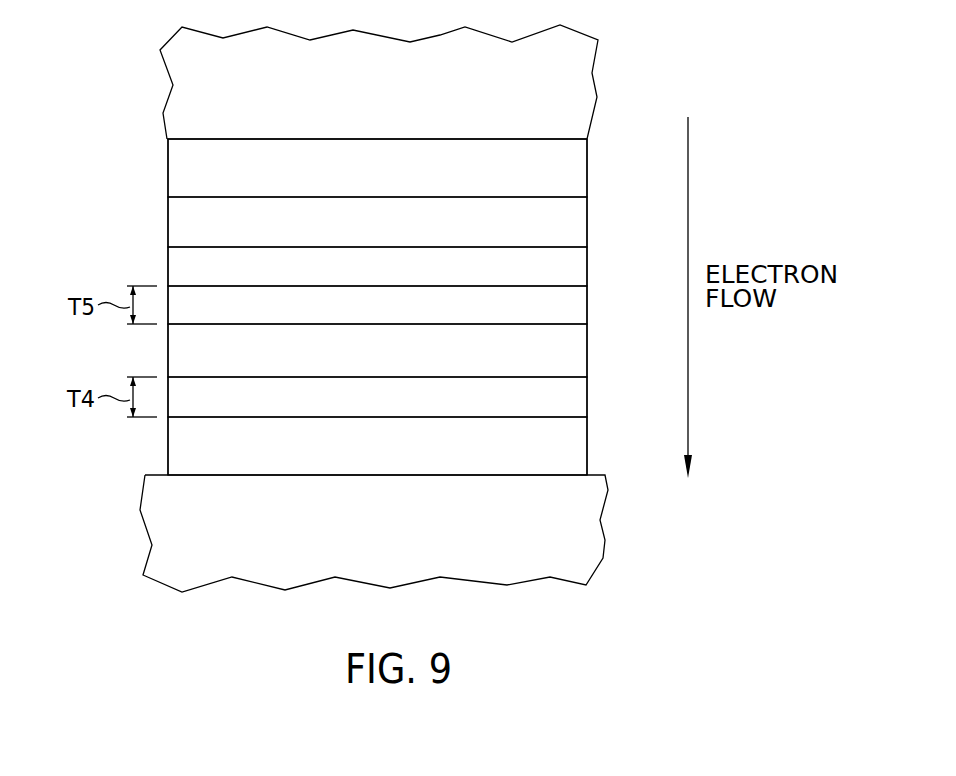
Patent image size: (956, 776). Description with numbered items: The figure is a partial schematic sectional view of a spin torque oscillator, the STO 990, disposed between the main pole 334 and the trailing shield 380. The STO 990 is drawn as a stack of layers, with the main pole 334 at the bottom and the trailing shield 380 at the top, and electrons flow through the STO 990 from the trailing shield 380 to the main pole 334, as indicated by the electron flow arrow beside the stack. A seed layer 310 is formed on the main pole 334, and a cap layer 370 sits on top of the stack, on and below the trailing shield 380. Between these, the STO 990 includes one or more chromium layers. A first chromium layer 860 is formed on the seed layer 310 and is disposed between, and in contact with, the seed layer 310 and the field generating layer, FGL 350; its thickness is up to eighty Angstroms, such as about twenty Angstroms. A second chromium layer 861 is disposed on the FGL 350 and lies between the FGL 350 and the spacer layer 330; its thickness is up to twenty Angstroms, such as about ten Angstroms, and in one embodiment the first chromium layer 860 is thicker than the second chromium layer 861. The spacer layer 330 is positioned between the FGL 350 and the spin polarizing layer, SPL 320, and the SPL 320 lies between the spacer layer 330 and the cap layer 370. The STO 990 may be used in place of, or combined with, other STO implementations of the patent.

The STO 990 is at (132, 185).
The trailing shield 380 is at (580, 95).
The cap layer 370 is at (580, 175).
The spin polarizing layer (SPL) 320 is at (580, 225).
The spacer layer 330 is at (580, 265).
The second chromium layer 861 is at (580, 303).
The field generating layer (FGL) 350 is at (580, 360).
The first chromium layer 860 is at (580, 395).
The seed layer 310 is at (580, 453).
The main pole 334 is at (580, 543).